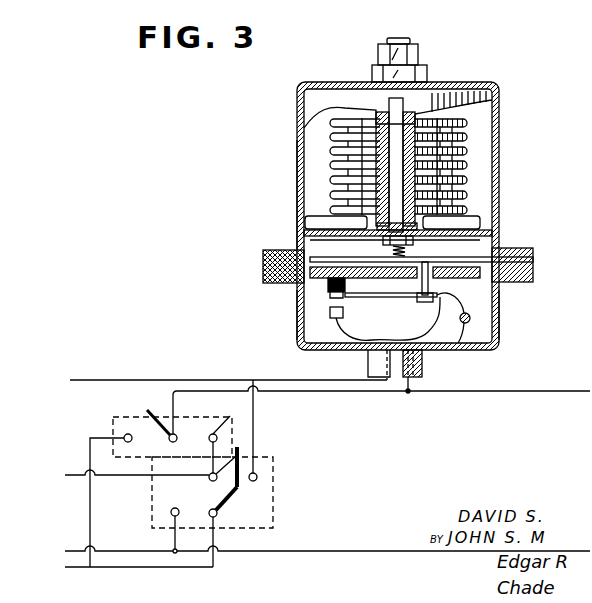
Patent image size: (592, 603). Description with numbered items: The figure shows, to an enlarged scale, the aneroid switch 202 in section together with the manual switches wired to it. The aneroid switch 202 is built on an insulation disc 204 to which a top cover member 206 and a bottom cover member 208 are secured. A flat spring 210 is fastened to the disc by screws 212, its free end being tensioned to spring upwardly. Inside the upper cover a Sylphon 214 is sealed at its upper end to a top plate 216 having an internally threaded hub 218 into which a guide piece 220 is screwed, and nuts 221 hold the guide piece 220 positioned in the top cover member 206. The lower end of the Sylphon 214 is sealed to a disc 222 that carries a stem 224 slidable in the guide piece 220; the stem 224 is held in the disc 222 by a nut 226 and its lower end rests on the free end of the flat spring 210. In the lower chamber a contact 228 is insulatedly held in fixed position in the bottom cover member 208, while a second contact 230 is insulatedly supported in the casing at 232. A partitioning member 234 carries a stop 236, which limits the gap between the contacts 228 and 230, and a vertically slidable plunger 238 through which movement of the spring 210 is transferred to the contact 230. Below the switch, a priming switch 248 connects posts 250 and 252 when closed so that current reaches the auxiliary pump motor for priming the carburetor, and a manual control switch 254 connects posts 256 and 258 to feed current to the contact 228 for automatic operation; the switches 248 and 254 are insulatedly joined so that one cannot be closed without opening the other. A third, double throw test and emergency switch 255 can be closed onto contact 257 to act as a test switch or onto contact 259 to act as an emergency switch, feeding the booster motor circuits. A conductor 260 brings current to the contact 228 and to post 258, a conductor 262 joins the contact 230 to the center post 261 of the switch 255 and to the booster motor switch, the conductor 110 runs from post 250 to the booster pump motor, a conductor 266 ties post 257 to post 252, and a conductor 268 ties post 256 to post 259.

The conductor 110 is at (138, 551).
The aneroid switch 202 is at (289, 136).
The insulation disc 204 is at (263, 267).
The top cover member 206 is at (297, 175).
The bottom cover member 208 is at (298, 328).
The flat spring 210 is at (533, 258).
The screws 212 is at (530, 270).
The Sylphon 214 is at (467, 140).
The top plate 216 is at (333, 109).
The internally threaded hub 218 is at (379, 109).
The guide piece 220 is at (446, 161).
The nuts 221 is at (414, 51).
The disc 222 is at (493, 236).
The stem 224 is at (463, 214).
The nut 226 is at (383, 242).
The contact 228 is at (330, 313).
The second contact 230 is at (402, 308).
The insulated support 232 is at (497, 322).
The partitioning member 234 is at (533, 283).
The stop 236 is at (345, 288).
The plunger 238 is at (499, 298).
The priming switch 248 is at (226, 497).
The post 250 is at (188, 511).
The post 252 is at (218, 515).
The manual control switch 254 is at (234, 450).
The double throw switch 255 is at (155, 407).
The post 256 is at (211, 478).
The contact 257 is at (122, 433).
The post 258 is at (258, 477).
The contact 259 is at (230, 418).
The conductor 260 is at (320, 383).
The center post 261 is at (159, 446).
The conductor 262 is at (486, 393).
The conductor 266 is at (177, 570).
The conductor 268 is at (137, 474).